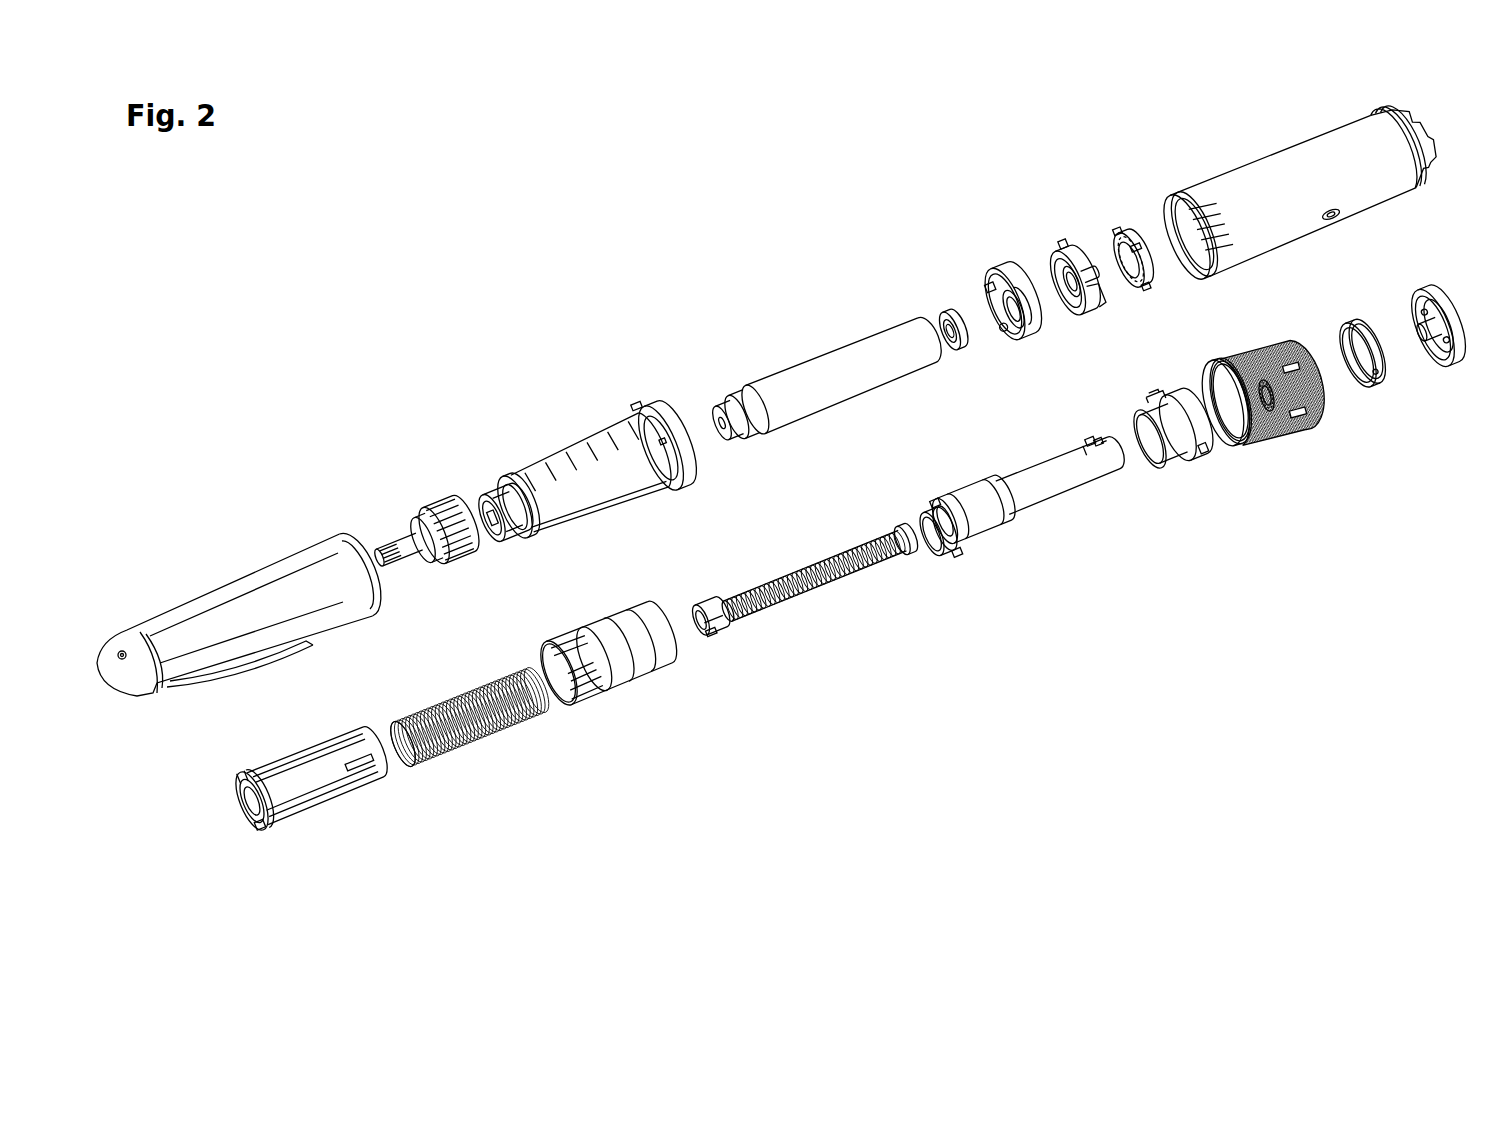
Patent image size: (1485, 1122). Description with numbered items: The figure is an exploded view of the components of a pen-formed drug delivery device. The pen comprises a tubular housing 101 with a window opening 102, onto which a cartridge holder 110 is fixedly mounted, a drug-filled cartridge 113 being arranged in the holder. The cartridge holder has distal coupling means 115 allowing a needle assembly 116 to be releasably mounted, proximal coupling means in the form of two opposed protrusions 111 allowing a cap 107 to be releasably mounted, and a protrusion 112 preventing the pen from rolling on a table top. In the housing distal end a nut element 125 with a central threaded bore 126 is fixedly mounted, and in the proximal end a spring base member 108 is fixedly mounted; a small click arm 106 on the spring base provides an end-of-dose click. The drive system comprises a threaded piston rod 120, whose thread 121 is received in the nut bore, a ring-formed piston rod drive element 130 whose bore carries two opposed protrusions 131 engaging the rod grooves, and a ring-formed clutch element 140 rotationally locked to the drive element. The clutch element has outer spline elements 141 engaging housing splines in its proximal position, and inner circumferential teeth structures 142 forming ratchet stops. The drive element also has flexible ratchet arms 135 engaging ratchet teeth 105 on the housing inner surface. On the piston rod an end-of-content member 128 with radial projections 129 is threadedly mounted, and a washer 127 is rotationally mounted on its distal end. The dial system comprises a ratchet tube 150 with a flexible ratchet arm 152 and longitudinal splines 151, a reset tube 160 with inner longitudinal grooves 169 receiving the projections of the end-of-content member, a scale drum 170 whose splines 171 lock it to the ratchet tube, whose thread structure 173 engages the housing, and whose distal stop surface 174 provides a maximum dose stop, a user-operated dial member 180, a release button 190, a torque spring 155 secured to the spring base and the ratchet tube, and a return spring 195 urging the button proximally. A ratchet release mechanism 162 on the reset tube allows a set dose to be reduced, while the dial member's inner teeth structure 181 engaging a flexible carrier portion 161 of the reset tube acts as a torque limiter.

The tubular housing 101 is at (1301, 209).
The window opening 102 is at (1351, 212).
The ratchet teeth 105 is at (1202, 238).
The click arm 106 is at (1170, 398).
The cap 107 is at (235, 583).
The spring base member 108 is at (1173, 453).
The cartridge holder 110 is at (548, 472).
The proximal coupling means 111 is at (667, 440).
The protrusion 112 is at (654, 401).
The drug-filled cartridge 113 is at (786, 385).
The distal coupling means 115 is at (481, 496).
The needle assembly 116 is at (415, 514).
The threaded piston rod 120 is at (819, 601).
The thread 121 is at (793, 584).
The nut element 125 is at (1001, 300).
The central threaded bore 126 is at (1012, 312).
The washer 127 is at (941, 315).
The end-of-content member 128 is at (701, 631).
The radial projections 129 is at (710, 635).
The piston rod drive element 130 is at (1073, 282).
The opposed protrusions 131 is at (1076, 285).
The flexible ratchet arms 135 is at (1058, 248).
The clutch element 140 is at (1157, 262).
The outer spline elements 141 is at (1114, 216).
The inner circumferential teeth structures 142 is at (1121, 270).
The ratchet tube 150 is at (313, 787).
The longitudinal splines 151 is at (373, 780).
The flexible ratchet arm 152 is at (260, 826).
The torque spring 155 is at (457, 700).
The reset tube 160 is at (1034, 519).
The flexible carrier portion 161 is at (1098, 463).
The ratchet release mechanism 162 is at (947, 546).
The longitudinal grooves 169 is at (939, 548).
The scale drum 170 is at (608, 684).
The longitudinal splines 171 is at (576, 702).
The thread structure 173 is at (640, 668).
The distal stop surface 174 is at (604, 681).
The dial member 180 is at (1272, 435).
The circumferential inner teeth structure 181 is at (1260, 404).
The release button 190 is at (1433, 368).
The return spring 195 is at (1370, 384).